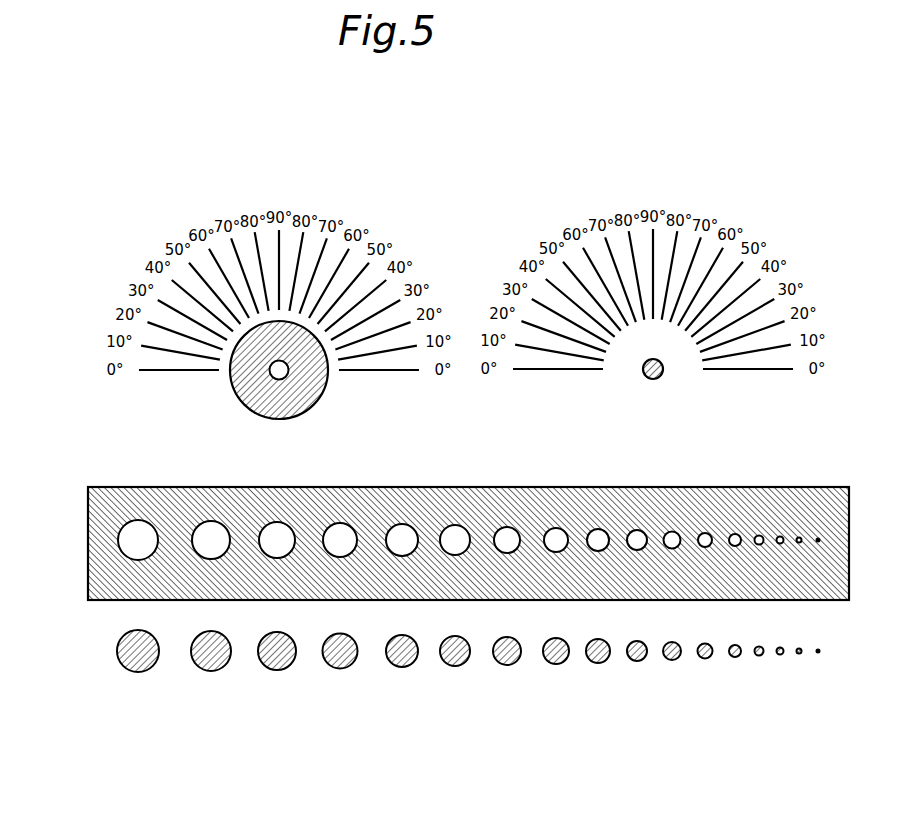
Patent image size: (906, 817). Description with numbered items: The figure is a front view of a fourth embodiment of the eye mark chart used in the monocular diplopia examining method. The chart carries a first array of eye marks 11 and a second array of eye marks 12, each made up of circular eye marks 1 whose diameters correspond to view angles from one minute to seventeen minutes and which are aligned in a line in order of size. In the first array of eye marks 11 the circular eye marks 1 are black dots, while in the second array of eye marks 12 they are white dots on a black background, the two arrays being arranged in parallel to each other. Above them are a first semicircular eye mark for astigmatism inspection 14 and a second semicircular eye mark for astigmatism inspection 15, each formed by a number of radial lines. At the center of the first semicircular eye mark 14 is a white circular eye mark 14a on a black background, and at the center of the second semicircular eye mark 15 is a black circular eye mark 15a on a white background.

The circular eye mark 1 is at (403, 535).
The first array of eye marks 11 is at (234, 690).
The second array of eye marks 12 is at (743, 507).
The first semicircular eye mark for astigmatism inspection 14 is at (279, 292).
The white circular eye mark 14a is at (243, 395).
The second semicircular eye mark for astigmatism inspection 15 is at (653, 279).
The black circular eye mark 15a is at (643, 375).